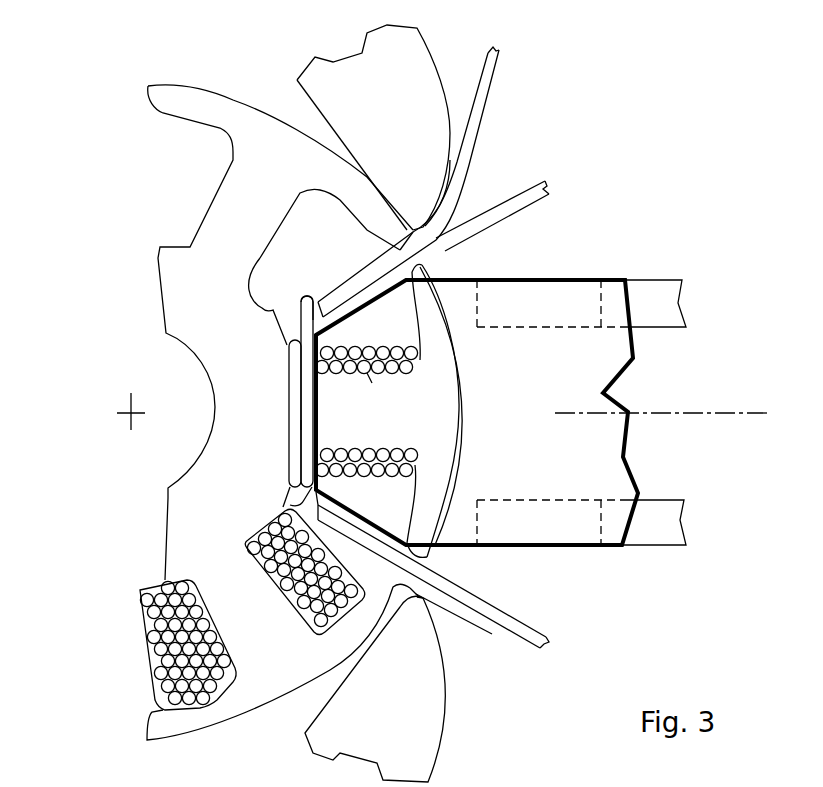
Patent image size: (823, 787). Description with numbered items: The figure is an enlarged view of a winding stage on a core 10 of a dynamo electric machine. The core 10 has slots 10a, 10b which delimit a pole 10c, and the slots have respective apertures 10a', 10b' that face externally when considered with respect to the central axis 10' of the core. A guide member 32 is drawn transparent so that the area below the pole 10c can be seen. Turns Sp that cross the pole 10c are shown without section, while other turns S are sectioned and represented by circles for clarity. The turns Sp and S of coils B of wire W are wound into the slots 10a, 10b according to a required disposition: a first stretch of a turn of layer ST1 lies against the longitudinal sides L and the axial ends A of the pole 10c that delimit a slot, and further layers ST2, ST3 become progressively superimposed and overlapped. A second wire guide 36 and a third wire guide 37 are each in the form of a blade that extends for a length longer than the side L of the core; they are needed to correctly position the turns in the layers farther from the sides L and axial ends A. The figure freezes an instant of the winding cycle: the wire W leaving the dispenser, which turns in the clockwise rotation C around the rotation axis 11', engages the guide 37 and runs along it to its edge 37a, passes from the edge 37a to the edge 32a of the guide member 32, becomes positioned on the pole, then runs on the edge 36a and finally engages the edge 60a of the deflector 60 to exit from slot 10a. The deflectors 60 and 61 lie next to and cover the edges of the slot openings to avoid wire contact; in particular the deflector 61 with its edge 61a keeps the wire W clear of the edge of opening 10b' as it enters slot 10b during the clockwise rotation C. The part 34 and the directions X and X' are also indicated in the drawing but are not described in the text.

The core 10 is at (280, 370).
The central axis 10' is at (101, 388).
The slot 10a is at (290, 267).
The aperture 10a' is at (353, 241).
The slot 10b is at (256, 496).
The aperture 10b' is at (480, 641).
The pole 10c is at (230, 212).
The rotation axis 11' is at (662, 382).
The guide member 32 is at (580, 445).
The edge 32a is at (313, 388).
The holder extension 34 is at (662, 528).
The second wire guide 36 is at (497, 212).
The edge 36a is at (320, 297).
The third wire guide 37 is at (490, 612).
The edge 37a is at (325, 497).
The deflector 60 is at (352, 72).
The edge 60a is at (437, 210).
The deflector 61 is at (400, 735).
The edge 61a is at (417, 597).
The wire W is at (483, 100).
The coils B is at (490, 173).
The direction X is at (672, 224).
The direction X' is at (762, 224).
The clockwise rotation C is at (735, 365).
The axial ends A is at (440, 408).
The longitudinal sides L is at (372, 383).
The turns S is at (267, 567).
The turns Sp is at (307, 423).
The layer of turns ST1 is at (410, 458).
The layer of turns ST2 is at (420, 470).
The layer of turns ST3 is at (145, 583).